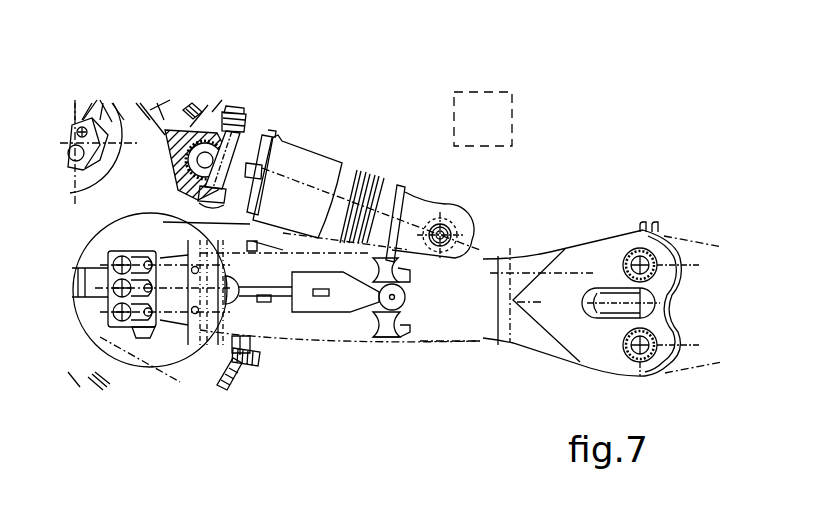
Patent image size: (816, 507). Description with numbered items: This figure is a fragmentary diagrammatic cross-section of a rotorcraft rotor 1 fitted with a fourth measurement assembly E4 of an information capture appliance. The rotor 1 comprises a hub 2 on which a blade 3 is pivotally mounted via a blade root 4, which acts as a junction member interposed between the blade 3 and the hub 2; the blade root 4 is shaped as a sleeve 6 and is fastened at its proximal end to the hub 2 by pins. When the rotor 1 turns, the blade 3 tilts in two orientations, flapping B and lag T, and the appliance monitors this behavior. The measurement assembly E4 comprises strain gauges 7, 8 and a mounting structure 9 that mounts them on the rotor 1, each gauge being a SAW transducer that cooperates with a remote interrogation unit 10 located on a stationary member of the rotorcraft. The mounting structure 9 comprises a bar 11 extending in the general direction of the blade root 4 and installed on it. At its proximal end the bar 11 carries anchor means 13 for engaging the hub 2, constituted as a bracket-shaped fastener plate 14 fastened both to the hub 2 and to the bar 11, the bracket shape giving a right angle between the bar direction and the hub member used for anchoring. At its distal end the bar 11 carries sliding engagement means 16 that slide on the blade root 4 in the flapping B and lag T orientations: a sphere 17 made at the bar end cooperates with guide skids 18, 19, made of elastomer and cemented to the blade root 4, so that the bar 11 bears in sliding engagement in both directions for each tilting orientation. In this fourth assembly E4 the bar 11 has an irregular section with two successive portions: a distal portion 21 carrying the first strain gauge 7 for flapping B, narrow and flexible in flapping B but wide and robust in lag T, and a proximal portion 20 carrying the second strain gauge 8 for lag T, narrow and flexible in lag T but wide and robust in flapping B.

The rotorcraft rotor 1 is at (75, 80).
The hub 2 is at (73, 270).
The blade 3 is at (706, 245).
The blade root 4 is at (535, 240).
The sleeve 6 is at (498, 256).
The first strain gauge 7 is at (320, 289).
The second strain gauge 8 is at (262, 303).
The mounting structure 9 is at (363, 360).
The remote interrogation unit 10 is at (483, 119).
The bar 11 is at (309, 324).
The anchor means 13 is at (250, 274).
The fastener plate 14 is at (238, 275).
The sliding engagement means 16 is at (447, 318).
The sphere 17 is at (405, 297).
The guide skid 18 is at (412, 330).
The guide skid 19 is at (410, 272).
The proximal portion 20 is at (236, 382).
The distal portion 21 is at (355, 310).
The flapping B is at (382, 212).
The lag T is at (407, 182).
The fourth measurement assembly E4 is at (306, 236).